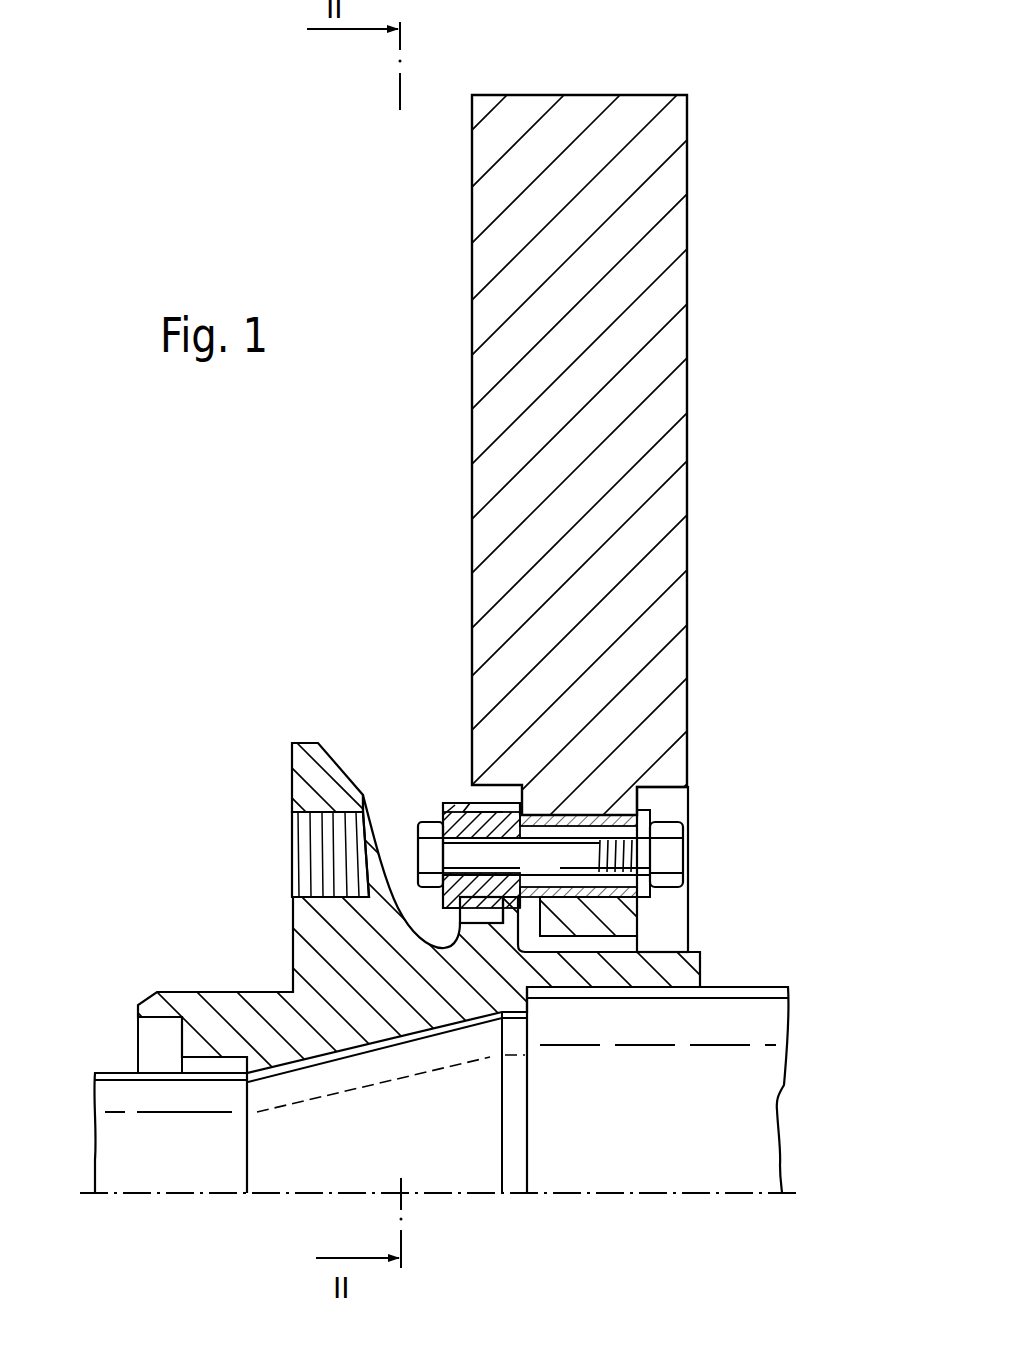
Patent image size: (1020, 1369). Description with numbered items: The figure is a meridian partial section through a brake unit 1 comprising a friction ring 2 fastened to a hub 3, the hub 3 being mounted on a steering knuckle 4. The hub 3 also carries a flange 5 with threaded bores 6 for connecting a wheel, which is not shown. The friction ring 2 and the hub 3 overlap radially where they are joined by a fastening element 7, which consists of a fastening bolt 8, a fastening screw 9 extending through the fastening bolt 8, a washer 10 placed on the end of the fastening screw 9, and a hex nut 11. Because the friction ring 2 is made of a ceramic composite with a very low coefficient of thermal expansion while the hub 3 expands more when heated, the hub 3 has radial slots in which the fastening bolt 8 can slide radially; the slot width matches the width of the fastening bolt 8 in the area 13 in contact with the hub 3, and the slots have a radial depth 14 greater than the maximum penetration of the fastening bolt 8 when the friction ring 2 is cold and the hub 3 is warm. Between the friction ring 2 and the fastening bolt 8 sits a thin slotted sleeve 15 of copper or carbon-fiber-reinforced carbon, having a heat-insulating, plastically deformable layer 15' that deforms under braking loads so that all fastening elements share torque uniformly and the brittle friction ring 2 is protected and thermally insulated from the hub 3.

The brake unit 1 is at (374, 648).
The friction ring 2 is at (645, 430).
The hub 3 is at (320, 965).
The steering knuckle 4 is at (757, 1089).
The flange 5 is at (320, 776).
The threaded bores 6 is at (320, 858).
The fastening element 7 is at (640, 805).
The fastening bolt 8 is at (445, 803).
The fastening screw 9 is at (430, 853).
The washer 10 is at (650, 893).
The hex nut 11 is at (690, 850).
The area in contact with hub 13 is at (463, 804).
The depth 14 is at (478, 915).
The sleeve 15 is at (653, 787).
The heat-insulating plastically deformable layer 15' is at (646, 718).